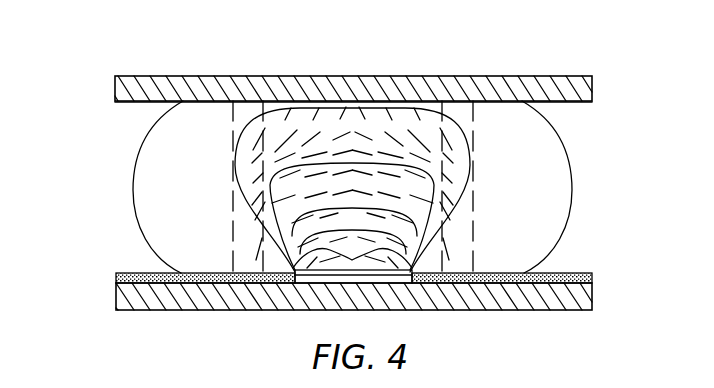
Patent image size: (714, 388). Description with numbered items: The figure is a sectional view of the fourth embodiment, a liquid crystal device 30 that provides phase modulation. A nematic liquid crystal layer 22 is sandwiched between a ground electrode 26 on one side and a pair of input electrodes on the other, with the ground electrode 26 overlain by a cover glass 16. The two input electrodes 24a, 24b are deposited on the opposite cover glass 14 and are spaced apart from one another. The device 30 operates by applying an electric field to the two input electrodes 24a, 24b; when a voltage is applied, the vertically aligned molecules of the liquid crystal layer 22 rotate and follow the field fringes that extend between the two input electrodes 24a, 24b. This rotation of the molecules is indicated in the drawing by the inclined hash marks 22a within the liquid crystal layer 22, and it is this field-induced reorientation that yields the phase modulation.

The device 30 is at (529, 55).
The cover glass 16 is at (225, 83).
The ground electrode 26 is at (137, 102).
The cover glass 14 is at (187, 298).
The input electrode 24a is at (137, 275).
The input electrode 24b is at (567, 273).
The nematic liquid crystal layer 22 is at (542, 145).
The inclined hash marks 22a is at (258, 178).